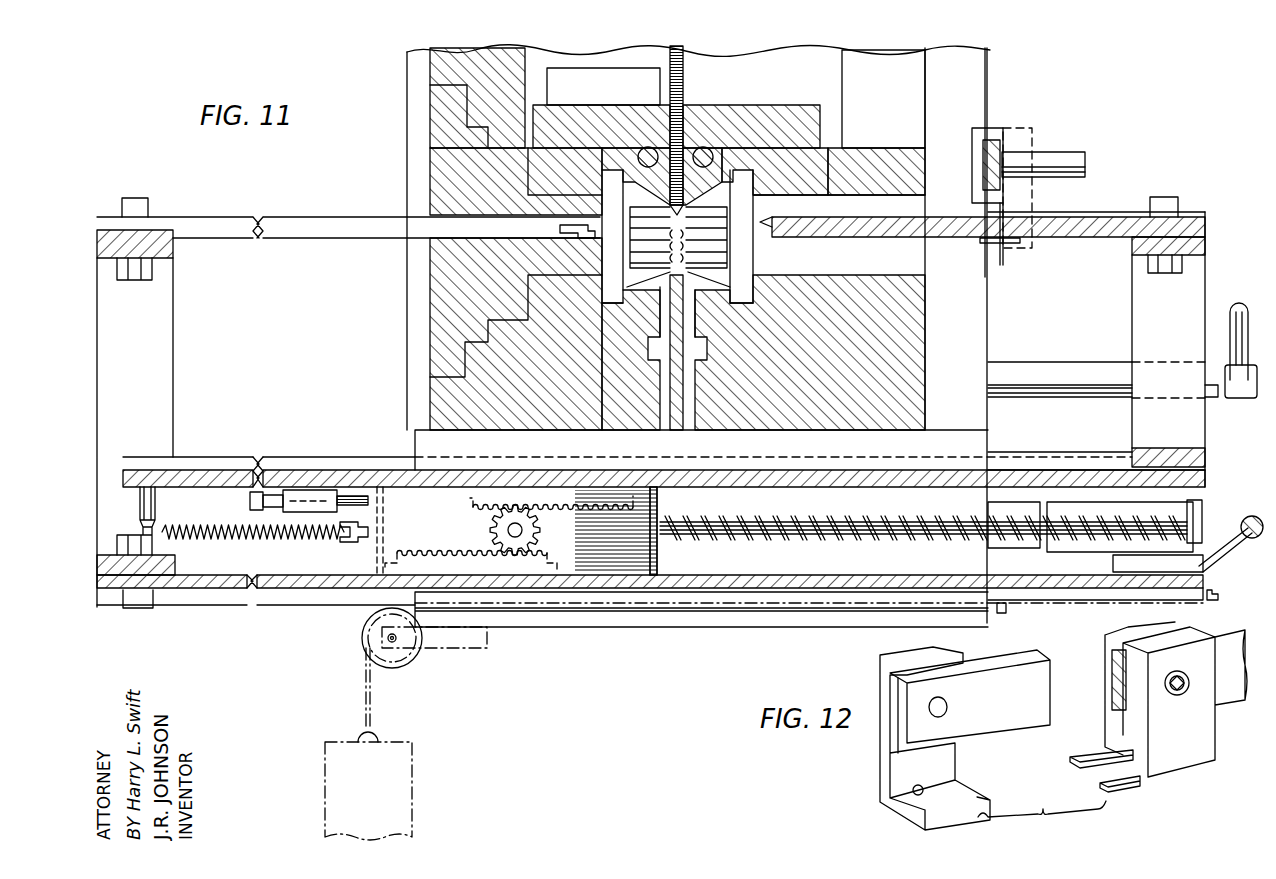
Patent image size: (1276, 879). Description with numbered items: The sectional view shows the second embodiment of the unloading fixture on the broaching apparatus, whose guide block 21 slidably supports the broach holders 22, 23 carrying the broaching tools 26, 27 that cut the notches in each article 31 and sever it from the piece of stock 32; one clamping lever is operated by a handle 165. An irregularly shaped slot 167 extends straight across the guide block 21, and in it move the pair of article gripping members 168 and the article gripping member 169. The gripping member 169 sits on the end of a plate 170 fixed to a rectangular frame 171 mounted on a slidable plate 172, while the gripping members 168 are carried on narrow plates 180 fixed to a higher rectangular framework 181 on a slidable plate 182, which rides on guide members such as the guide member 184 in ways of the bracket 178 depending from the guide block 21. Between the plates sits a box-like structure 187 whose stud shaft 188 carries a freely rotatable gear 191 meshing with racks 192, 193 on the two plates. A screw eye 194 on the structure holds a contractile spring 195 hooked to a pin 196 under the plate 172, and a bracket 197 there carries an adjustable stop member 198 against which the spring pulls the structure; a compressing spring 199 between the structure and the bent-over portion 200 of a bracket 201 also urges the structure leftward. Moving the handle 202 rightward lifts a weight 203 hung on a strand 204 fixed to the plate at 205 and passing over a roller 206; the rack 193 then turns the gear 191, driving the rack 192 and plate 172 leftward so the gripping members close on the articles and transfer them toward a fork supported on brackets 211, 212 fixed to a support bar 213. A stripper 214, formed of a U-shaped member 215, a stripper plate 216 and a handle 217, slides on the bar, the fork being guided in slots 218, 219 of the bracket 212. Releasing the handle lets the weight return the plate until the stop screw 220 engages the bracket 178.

In FIG. 11, the guide block 21 is at (912, 332).
In FIG. 11, the broach holder 22 is at (740, 290).
In FIG. 11, the broach holder 23 is at (618, 282).
In FIG. 11, the broaching tool 26 is at (652, 255).
In FIG. 11, the broaching tool 27 is at (715, 273).
In FIG. 11, the article 31 is at (686, 218).
In FIG. 11, the piece of stock 32 is at (684, 78).
In FIG. 11, the handle 165 is at (1240, 305).
In FIG. 11, the irregularly shaped slot 167 is at (903, 275).
In FIG. 11, the article gripping members 168 is at (560, 229).
In FIG. 11, the article gripping member 169 is at (776, 230).
In FIG. 11, the plate 170 is at (1050, 240).
In FIG. 11, the rectangular frame 171 is at (1142, 313).
In FIG. 11, the slidable plate 172 is at (1078, 472).
In FIG. 11, the bracket 178 is at (758, 563).
In FIG. 11, the narrow plates 180 is at (212, 222).
In FIG. 11, the rectangular framework 181 is at (163, 341).
In FIG. 11, the slidable plate 182 is at (190, 595).
In FIG. 11, the guide member 184 is at (318, 600).
In FIG. 11, the box-like structure 187 is at (660, 503).
In FIG. 11, the stud shaft 188 is at (525, 531).
In FIG. 11, the gear 191 is at (540, 537).
In FIG. 11, the rack 192 is at (470, 503).
In FIG. 11, the rack 193 is at (470, 550).
In FIG. 11, the screw eye 194 is at (357, 538).
In FIG. 11, the contractile spring 195 is at (260, 538).
In FIG. 11, the pin 196 is at (152, 502).
In FIG. 11, the bracket 197 is at (308, 490).
In FIG. 11, the adjustable stop member 198 is at (266, 490).
In FIG. 11, the compressing spring 199 is at (776, 536).
In FIG. 11, the bent-over portion 200 is at (1200, 514).
In FIG. 11, the bracket 201 is at (1165, 505).
In FIG. 11, the handle 202 is at (1240, 540).
In FIG. 11, the weight 203 is at (410, 775).
In FIG. 11, the strand 204 is at (364, 692).
In FIG. 11, the attachment point 205 is at (1214, 601).
In FIG. 11, the roller 206 is at (408, 660).
In FIG. 12, the bracket 211 is at (890, 775).
In FIG. 12, the bracket 212 is at (1200, 752).
In FIG. 11, the support bar 213 is at (1010, 131).
In FIG. 12, the support bar 213 is at (1022, 680).
In FIG. 11, the stripper 214 is at (1000, 123).
In FIG. 11, the U-shaped member 215 is at (972, 134).
In FIG. 11, the stripper plate 216 is at (1000, 192).
In FIG. 11, the handle 217 is at (1070, 160).
In FIG. 12, the slot 218 is at (1112, 755).
In FIG. 12, the slot 219 is at (1130, 778).
In FIG. 11, the stop screw 220 is at (1005, 614).